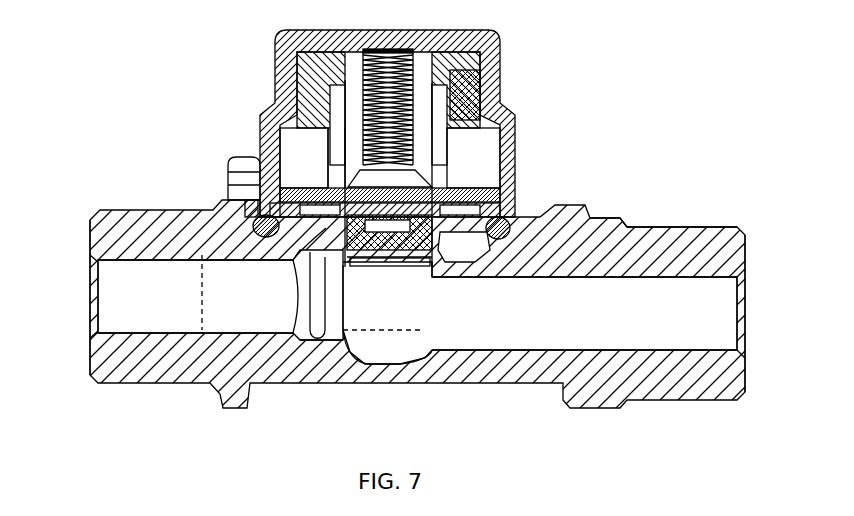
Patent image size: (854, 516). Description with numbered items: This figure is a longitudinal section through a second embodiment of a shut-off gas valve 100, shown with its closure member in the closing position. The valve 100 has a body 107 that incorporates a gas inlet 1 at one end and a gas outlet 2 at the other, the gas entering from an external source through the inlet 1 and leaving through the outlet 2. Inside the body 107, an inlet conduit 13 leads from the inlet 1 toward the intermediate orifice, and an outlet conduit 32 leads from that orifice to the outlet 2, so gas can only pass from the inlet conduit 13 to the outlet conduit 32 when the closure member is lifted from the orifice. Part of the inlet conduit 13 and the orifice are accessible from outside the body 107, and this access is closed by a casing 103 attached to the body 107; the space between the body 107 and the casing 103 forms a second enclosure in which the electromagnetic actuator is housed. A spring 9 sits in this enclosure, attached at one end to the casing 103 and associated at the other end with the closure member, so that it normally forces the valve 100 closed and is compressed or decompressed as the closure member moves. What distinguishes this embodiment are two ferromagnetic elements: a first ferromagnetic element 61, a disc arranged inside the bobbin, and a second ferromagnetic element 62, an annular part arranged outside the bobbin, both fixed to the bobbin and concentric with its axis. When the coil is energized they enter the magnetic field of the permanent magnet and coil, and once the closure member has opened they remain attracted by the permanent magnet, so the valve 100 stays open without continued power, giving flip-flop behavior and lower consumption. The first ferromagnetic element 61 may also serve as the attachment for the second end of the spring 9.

The gas inlet 1 is at (89, 295).
The gas outlet 2 is at (752, 310).
The spring 9 is at (457, 70).
The inlet conduit 13 is at (135, 277).
The outlet conduit 32 is at (688, 300).
The first ferromagnetic element 61 is at (381, 198).
The second ferromagnetic element 62 is at (262, 150).
The shut-off gas valve 100 is at (584, 114).
The casing 103 is at (275, 67).
The body 107 is at (643, 237).